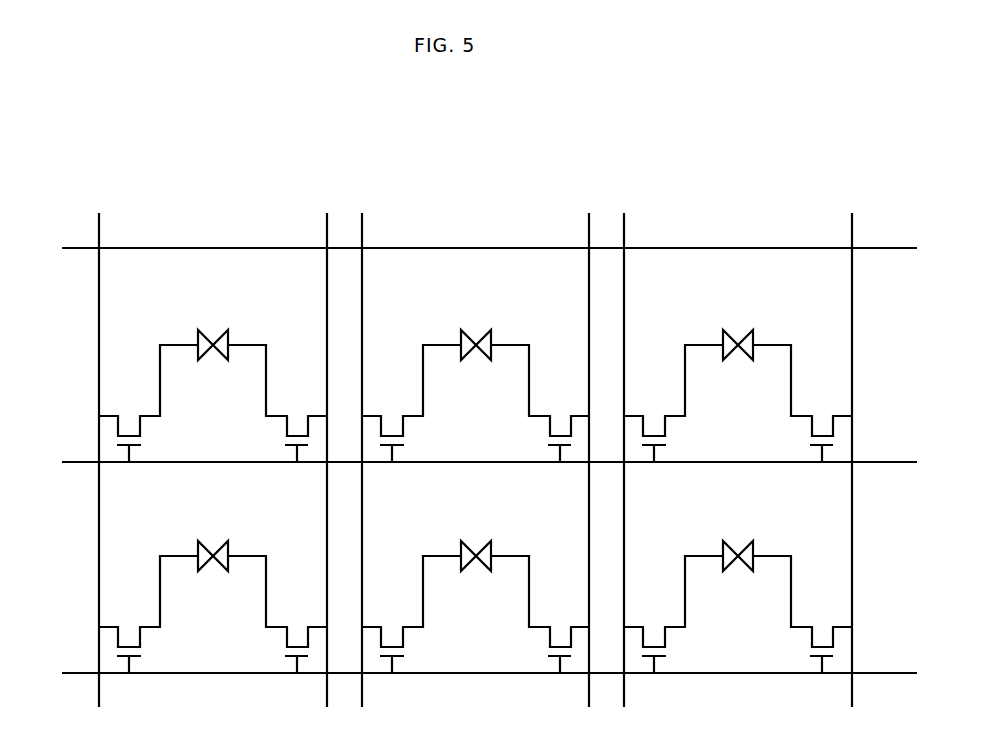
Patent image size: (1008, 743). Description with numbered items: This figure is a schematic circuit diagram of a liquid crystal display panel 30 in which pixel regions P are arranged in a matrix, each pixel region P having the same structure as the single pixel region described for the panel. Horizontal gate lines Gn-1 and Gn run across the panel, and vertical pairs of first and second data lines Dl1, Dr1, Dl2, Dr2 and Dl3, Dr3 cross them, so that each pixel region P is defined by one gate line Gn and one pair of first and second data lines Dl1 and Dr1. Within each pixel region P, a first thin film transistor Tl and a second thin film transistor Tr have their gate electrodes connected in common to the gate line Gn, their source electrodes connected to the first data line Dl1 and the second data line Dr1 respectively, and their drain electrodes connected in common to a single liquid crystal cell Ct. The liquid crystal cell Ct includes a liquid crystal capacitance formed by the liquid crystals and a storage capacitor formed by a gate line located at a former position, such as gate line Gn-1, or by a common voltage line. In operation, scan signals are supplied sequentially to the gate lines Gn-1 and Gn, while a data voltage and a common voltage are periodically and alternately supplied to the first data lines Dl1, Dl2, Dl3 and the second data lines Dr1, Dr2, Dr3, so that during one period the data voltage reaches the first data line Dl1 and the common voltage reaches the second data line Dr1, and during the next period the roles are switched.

The liquid crystal display panel 30 is at (462, 397).
The pixel region P is at (213, 328).
The first data line Dl1 is at (100, 449).
The second data line Dr1 is at (322, 449).
The first data line Dl2 is at (361, 449).
The second data line Dr2 is at (582, 449).
The first data line Dl3 is at (626, 449).
The second data line Dr3 is at (847, 449).
The gate line Gn-1 is at (462, 248).
The gate line Gn is at (472, 462).
The first thin film transistor Tl is at (148, 403).
The second thin film transistor Tr is at (277, 403).
The liquid crystal cell Ct is at (213, 332).